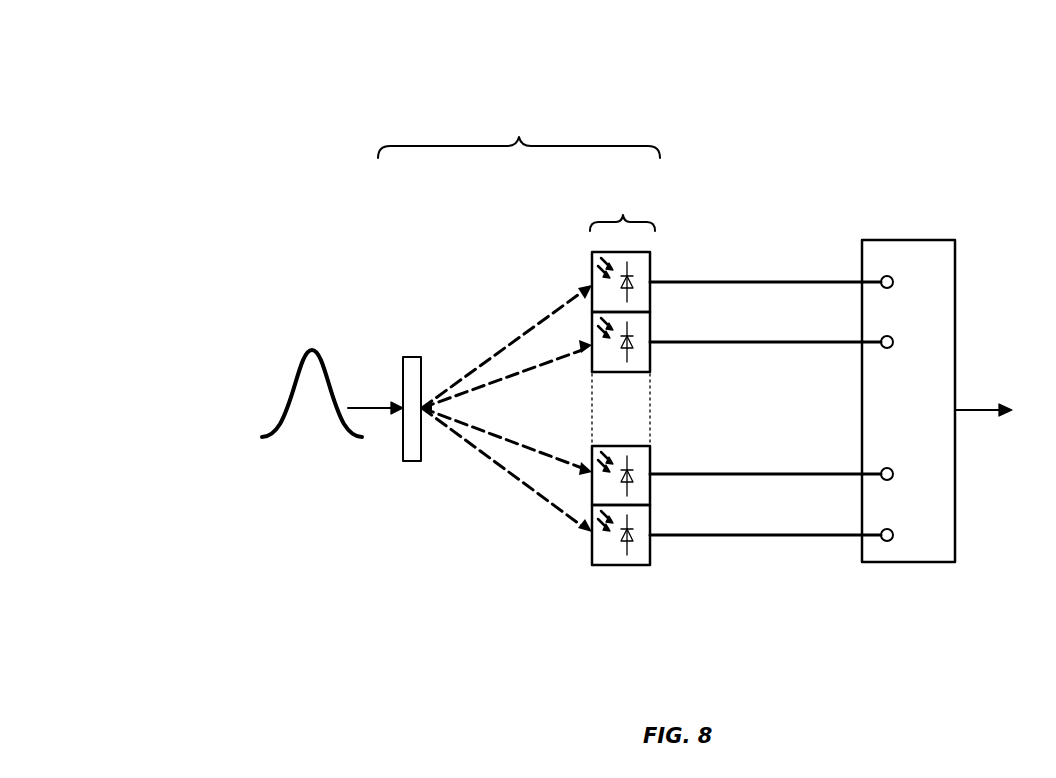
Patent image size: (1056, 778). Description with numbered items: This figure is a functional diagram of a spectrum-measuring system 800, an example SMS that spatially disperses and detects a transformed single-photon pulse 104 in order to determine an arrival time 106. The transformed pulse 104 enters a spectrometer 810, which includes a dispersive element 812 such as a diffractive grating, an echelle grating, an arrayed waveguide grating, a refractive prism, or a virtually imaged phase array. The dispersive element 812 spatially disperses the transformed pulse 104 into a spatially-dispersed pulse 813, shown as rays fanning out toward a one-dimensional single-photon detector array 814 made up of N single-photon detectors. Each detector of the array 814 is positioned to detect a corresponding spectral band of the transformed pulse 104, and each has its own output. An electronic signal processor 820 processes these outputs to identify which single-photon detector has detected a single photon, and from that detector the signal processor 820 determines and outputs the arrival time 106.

The spectrum-measuring system 800 is at (133, 112).
The transformed single-photon pulse 104 is at (312, 350).
The spectrometer 810 is at (572, 334).
The dispersive element 812 is at (412, 357).
The spatially-dispersed pulse 813 is at (481, 268).
The single-photon detector array 814 is at (678, 376).
The electronic signal processor 820 is at (910, 240).
The arrival time 106 is at (1005, 411).